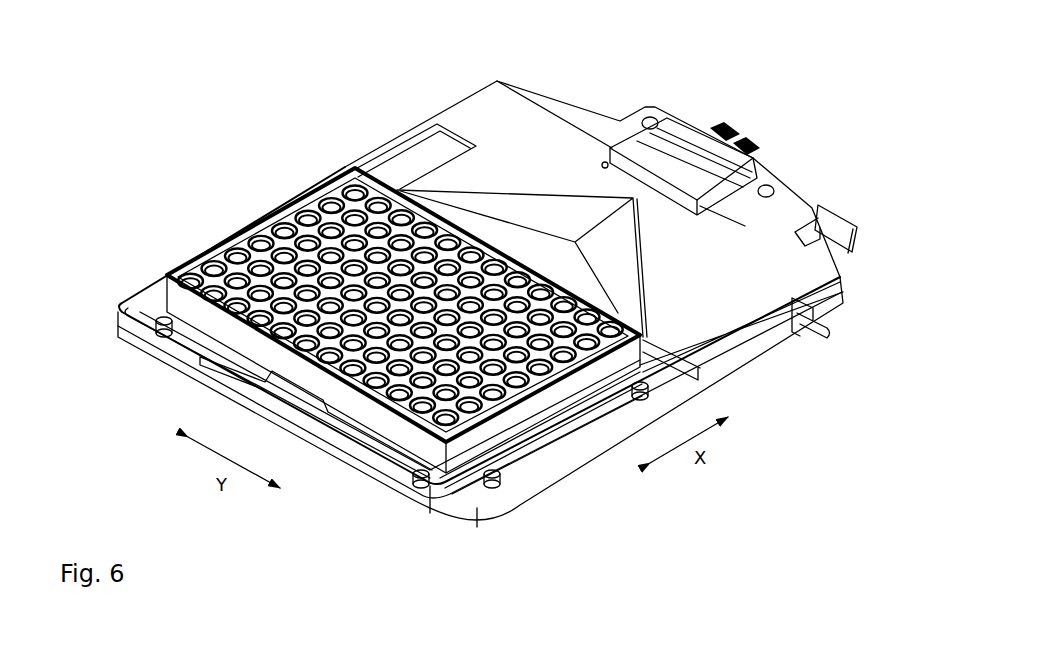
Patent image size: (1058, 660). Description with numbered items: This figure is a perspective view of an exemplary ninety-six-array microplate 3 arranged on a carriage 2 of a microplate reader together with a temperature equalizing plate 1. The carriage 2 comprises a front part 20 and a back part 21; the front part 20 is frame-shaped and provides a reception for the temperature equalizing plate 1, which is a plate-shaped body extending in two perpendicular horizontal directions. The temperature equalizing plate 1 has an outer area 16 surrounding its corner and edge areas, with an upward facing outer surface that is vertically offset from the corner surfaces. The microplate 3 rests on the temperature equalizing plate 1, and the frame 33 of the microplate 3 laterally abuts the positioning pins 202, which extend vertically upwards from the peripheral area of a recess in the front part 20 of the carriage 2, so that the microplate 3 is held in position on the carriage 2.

The temperature equalizing plate 1 is at (572, 432).
The carriage 2 is at (843, 82).
The microplate 3 is at (239, 235).
The outer area 16 is at (545, 448).
The front part 20 is at (158, 411).
The back part 21 is at (352, 80).
The frame 33 is at (175, 305).
The positioning pins 202 is at (416, 468).